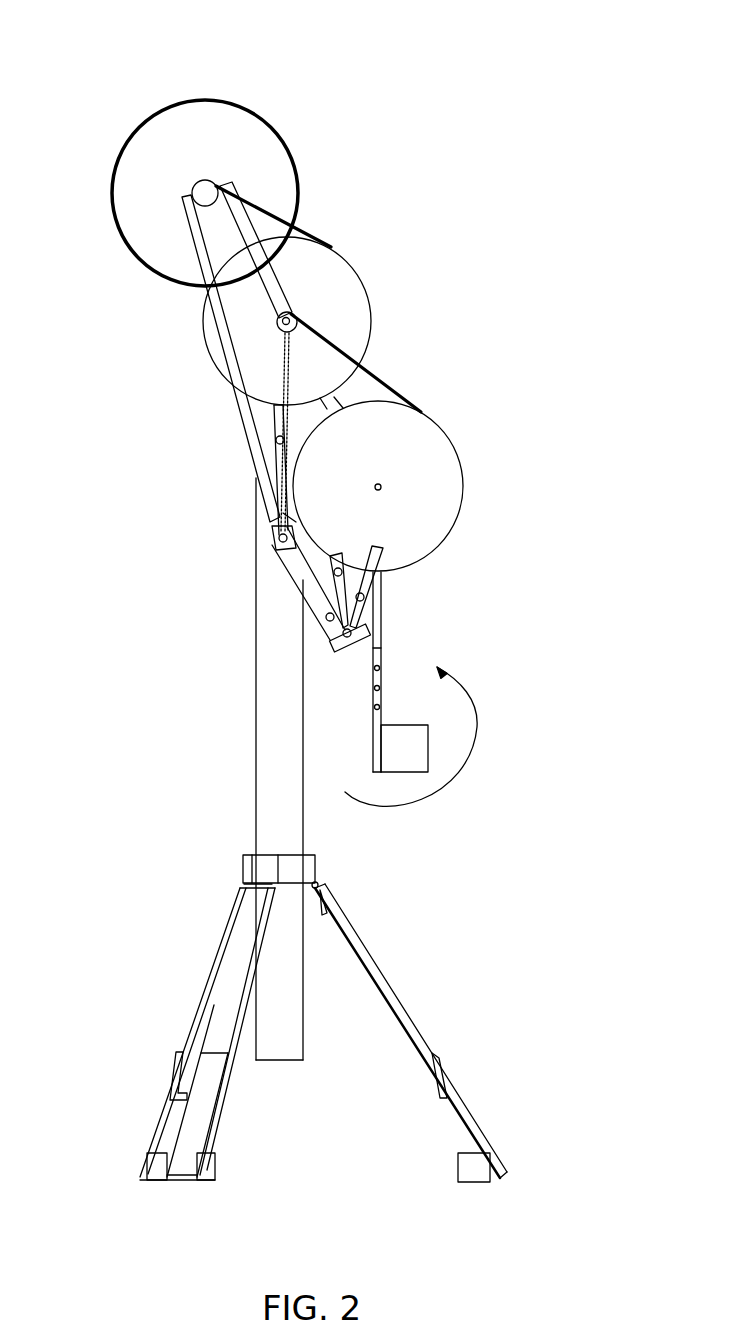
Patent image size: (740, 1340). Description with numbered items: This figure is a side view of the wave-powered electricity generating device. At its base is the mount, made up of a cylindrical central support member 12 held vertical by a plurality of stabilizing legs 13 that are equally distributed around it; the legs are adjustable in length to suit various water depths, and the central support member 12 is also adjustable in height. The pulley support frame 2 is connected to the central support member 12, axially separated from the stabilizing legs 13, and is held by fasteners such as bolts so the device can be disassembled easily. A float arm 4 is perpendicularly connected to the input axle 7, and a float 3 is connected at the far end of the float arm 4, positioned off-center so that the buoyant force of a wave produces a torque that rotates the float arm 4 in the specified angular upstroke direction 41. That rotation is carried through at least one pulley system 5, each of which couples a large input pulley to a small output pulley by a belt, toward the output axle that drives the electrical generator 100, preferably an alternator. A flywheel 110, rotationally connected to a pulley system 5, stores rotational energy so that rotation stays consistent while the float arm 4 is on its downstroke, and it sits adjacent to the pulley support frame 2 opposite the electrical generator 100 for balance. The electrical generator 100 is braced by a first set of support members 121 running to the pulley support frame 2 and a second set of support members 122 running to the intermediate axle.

The flywheel 110 is at (193, 133).
The electrical generator 100 is at (203, 195).
The first set of support members 121 is at (222, 320).
The second set of support members 122 is at (237, 215).
The pulley system 5 is at (277, 214).
The input axle 7 is at (381, 487).
The pulley support frame 2 is at (350, 620).
The float arm 4 is at (380, 660).
The float 3 is at (420, 750).
The specified angular upstroke direction 41 is at (475, 722).
The central support member 12 is at (270, 726).
The stabilizing legs 13 is at (202, 1028).